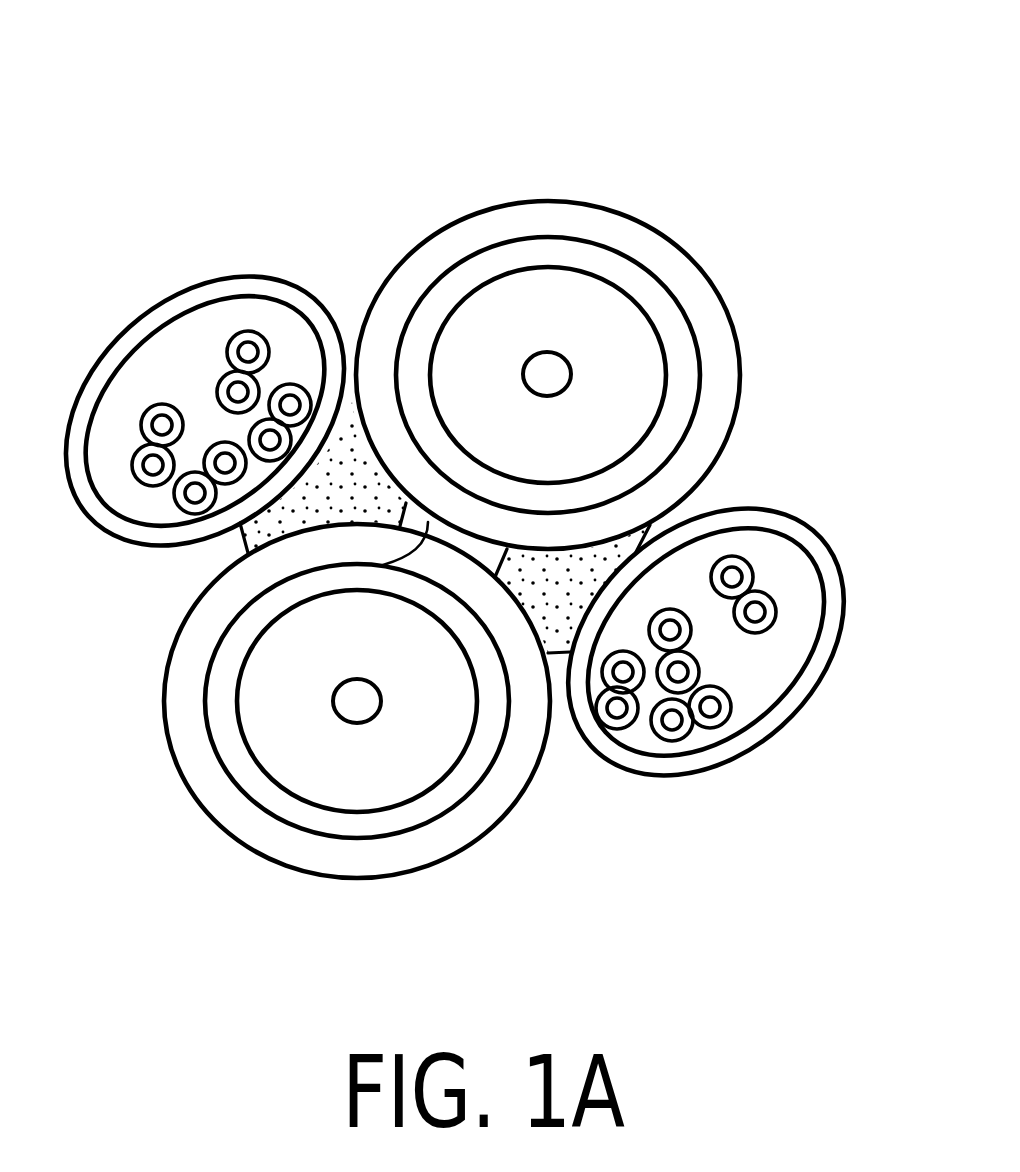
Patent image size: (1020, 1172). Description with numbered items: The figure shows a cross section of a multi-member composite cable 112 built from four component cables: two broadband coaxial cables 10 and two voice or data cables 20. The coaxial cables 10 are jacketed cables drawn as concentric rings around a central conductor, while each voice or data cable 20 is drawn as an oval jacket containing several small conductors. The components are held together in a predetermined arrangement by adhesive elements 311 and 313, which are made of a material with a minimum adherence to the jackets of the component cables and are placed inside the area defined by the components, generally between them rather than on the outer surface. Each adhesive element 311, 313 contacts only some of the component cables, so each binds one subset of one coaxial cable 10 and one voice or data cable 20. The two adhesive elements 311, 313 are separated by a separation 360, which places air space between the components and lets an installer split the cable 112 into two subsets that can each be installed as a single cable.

The multi-member cable 112 is at (785, 124).
The coaxial cable 10 is at (544, 203).
The voice or data cable 20 is at (180, 290).
The adhesive element 313 is at (353, 457).
The adhesive element 311 is at (604, 564).
The separation 360 is at (383, 565).